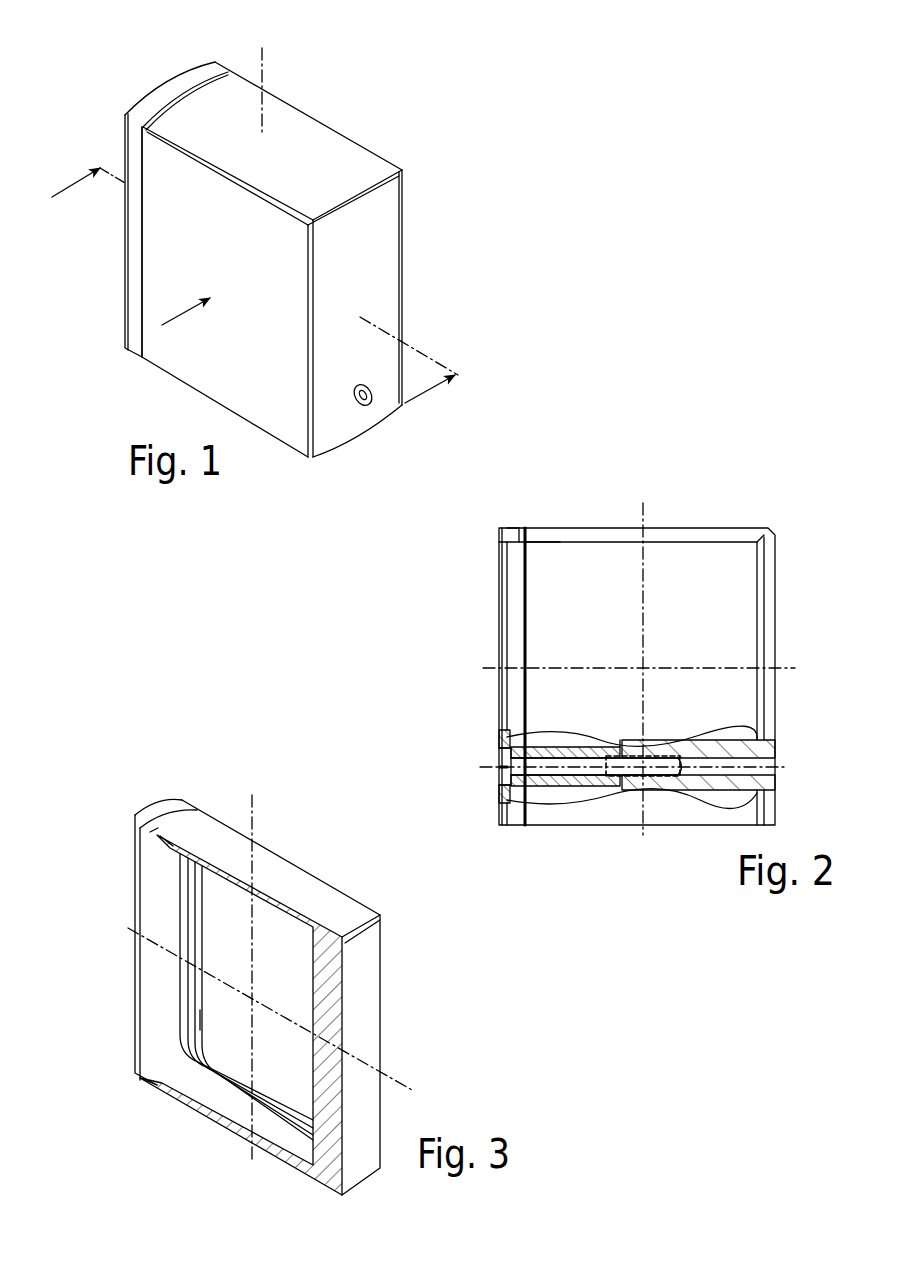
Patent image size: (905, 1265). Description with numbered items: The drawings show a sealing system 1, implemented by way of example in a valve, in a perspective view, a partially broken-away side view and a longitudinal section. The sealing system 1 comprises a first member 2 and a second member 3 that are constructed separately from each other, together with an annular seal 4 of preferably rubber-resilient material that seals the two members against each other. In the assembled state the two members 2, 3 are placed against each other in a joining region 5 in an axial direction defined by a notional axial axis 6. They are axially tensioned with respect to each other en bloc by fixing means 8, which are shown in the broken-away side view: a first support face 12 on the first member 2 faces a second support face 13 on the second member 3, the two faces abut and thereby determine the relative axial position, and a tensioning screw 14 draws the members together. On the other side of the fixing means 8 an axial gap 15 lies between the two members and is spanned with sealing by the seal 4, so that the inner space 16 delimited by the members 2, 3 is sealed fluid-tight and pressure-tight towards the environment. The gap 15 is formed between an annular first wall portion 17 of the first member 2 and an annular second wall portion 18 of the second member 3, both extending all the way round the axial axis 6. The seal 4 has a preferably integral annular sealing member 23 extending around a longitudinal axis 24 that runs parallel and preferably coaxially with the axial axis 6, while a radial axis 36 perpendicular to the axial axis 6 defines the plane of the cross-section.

In FIG. 1, the sealing system 1 is at (273, 229).
In FIG. 2, the sealing system 1 is at (630, 665).
In FIG. 3, the sealing system 1 is at (260, 964).
In FIG. 1, the first member 2 is at (152, 179).
In FIG. 2, the first member 2 is at (467, 668).
In FIG. 3, the first member 2 is at (185, 973).
In FIG. 1, the second member 3 is at (394, 272).
In FIG. 2, the second member 3 is at (772, 618).
In FIG. 3, the second member 3 is at (374, 994).
In FIG. 1, the annular seal 4 is at (142, 300).
In FIG. 2, the annular seal 4 is at (503, 689).
In FIG. 3, the annular seal 4 is at (158, 838).
In FIG. 1, the joining region 5 is at (199, 78).
In FIG. 2, the joining region 5 is at (524, 830).
In FIG. 3, the joining region 5 is at (154, 1084).
In FIG. 1, the axial axis 6 is at (429, 332).
In FIG. 2, the axial axis 6 is at (664, 710).
In FIG. 3, the axial axis 6 is at (295, 1010).
In FIG. 2, the fixing means 8 is at (673, 789).
In FIG. 2, the first support face 12 is at (627, 751).
In FIG. 2, the second support face 13 is at (619, 790).
In FIG. 2, the tensioning screw 14 is at (568, 772).
In FIG. 2, the axial gap 15 is at (525, 530).
In FIG. 3, the inner space 16 is at (296, 936).
In FIG. 2, the first wall portion 17 is at (513, 533).
In FIG. 3, the first wall portion 17 is at (150, 831).
In FIG. 2, the second wall portion 18 is at (541, 532).
In FIG. 3, the second wall portion 18 is at (172, 846).
In FIG. 3, the annular sealing member 23 is at (201, 1021).
In FIG. 1, the longitudinal axis 24 is at (441, 360).
In FIG. 2, the longitudinal axis 24 is at (791, 672).
In FIG. 3, the longitudinal axis 24 is at (395, 1075).
In FIG. 1, the radial axis 36 is at (273, 67).
In FIG. 2, the radial axis 36 is at (648, 506).
In FIG. 3, the radial axis 36 is at (255, 806).